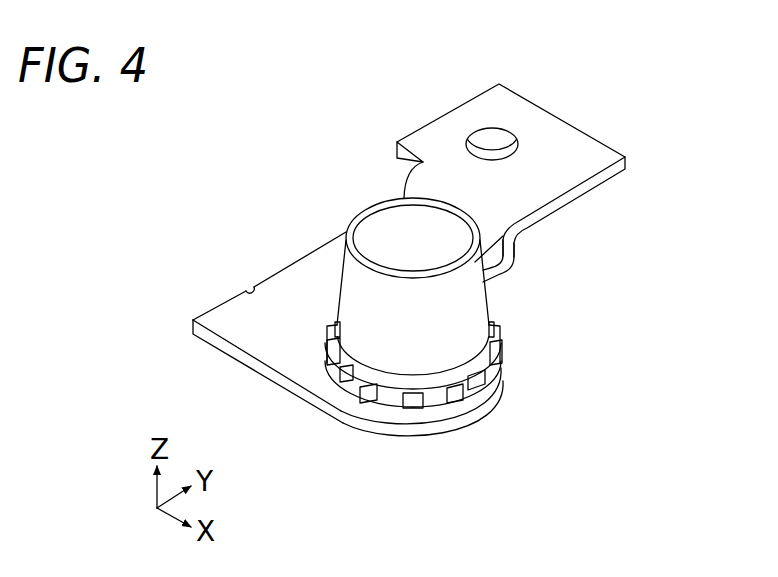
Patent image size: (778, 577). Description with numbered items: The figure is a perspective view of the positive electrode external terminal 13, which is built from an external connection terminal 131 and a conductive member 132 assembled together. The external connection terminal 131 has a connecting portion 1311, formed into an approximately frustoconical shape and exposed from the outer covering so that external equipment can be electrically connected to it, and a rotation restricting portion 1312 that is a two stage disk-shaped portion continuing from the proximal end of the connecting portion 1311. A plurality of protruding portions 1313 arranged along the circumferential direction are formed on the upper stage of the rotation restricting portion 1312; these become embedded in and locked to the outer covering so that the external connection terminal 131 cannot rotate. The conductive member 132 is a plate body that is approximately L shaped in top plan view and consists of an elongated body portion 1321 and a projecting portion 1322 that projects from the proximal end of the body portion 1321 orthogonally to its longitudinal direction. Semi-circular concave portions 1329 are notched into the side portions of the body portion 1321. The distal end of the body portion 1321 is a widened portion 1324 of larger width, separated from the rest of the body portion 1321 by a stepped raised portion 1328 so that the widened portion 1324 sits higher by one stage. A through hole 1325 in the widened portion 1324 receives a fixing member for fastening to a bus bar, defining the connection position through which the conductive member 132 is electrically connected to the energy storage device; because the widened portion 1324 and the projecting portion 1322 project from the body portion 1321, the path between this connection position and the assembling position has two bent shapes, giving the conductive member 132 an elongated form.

The positive electrode external terminal 13 is at (562, 54).
The external connection terminal 131 is at (489, 297).
The connecting portion 1311 is at (516, 241).
The rotation restricting portion 1312 is at (501, 367).
The protruding portions 1313 is at (457, 402).
The conductive member 132 is at (573, 124).
The body portion 1321 is at (278, 302).
The projecting portion 1322 is at (478, 407).
The widened portion 1324 is at (440, 140).
The through hole 1325 is at (487, 129).
The raised portion 1328 is at (413, 182).
The concave portions 1329 is at (244, 293).